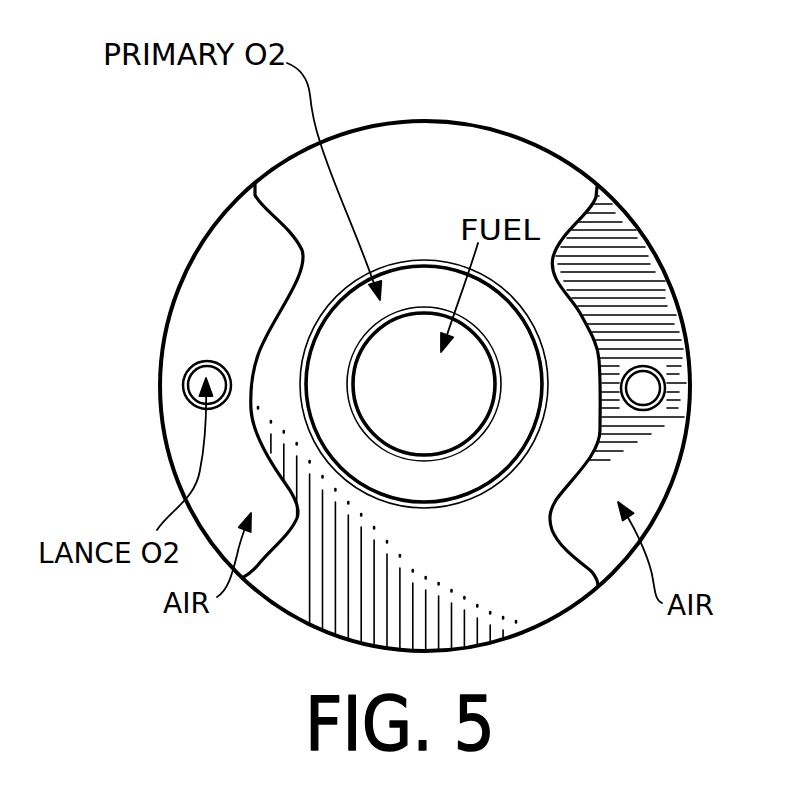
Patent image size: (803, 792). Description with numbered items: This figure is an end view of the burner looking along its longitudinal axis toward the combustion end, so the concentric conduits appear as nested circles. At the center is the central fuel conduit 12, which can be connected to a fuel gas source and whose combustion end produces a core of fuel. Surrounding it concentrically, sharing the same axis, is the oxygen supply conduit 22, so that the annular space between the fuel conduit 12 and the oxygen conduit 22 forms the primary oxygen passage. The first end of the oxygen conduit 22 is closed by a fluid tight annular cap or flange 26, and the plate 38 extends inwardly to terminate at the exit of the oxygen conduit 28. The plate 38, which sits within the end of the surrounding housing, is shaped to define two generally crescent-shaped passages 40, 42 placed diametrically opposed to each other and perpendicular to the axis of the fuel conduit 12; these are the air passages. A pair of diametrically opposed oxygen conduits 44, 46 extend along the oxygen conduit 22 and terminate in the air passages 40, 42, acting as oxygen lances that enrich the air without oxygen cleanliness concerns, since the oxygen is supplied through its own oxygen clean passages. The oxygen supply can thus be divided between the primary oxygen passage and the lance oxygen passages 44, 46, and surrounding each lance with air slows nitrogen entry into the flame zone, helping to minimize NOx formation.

The central fuel conduit 12 is at (360, 402).
The oxygen supply conduit 22 is at (548, 352).
The annular cap or flange 26 is at (412, 457).
The oxygen conduit exit 28 is at (485, 495).
The plate 38 is at (442, 140).
The crescent-shaped passage 40 is at (185, 456).
The crescent-shaped passage 42 is at (638, 260).
The oxygen conduit 44 is at (207, 362).
The oxygen conduit 46 is at (660, 367).